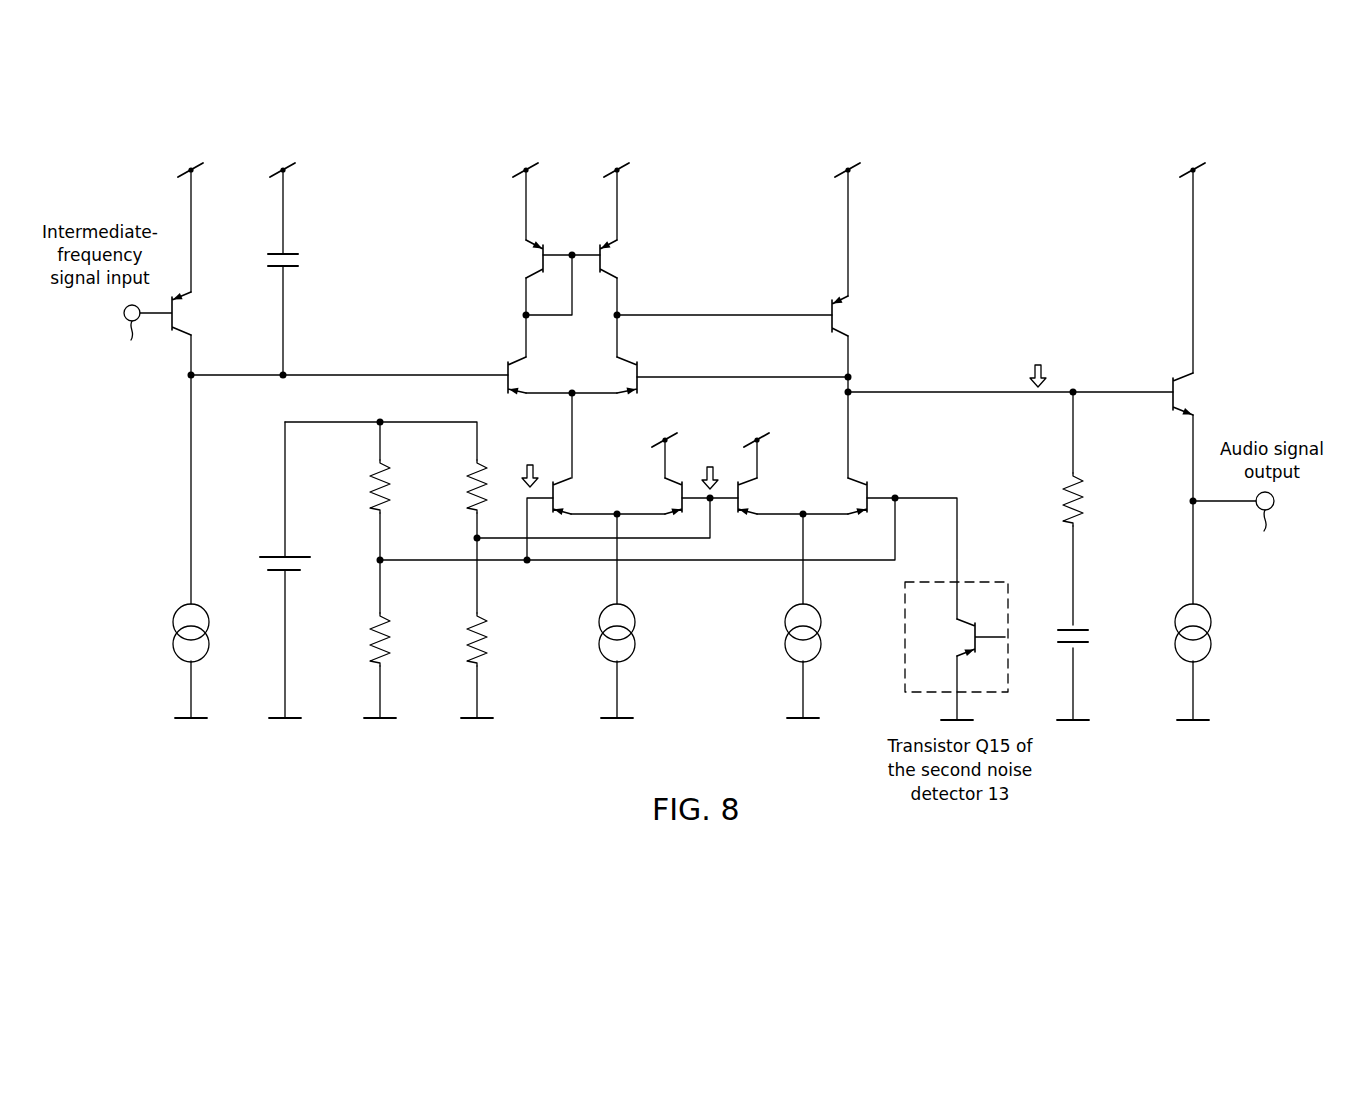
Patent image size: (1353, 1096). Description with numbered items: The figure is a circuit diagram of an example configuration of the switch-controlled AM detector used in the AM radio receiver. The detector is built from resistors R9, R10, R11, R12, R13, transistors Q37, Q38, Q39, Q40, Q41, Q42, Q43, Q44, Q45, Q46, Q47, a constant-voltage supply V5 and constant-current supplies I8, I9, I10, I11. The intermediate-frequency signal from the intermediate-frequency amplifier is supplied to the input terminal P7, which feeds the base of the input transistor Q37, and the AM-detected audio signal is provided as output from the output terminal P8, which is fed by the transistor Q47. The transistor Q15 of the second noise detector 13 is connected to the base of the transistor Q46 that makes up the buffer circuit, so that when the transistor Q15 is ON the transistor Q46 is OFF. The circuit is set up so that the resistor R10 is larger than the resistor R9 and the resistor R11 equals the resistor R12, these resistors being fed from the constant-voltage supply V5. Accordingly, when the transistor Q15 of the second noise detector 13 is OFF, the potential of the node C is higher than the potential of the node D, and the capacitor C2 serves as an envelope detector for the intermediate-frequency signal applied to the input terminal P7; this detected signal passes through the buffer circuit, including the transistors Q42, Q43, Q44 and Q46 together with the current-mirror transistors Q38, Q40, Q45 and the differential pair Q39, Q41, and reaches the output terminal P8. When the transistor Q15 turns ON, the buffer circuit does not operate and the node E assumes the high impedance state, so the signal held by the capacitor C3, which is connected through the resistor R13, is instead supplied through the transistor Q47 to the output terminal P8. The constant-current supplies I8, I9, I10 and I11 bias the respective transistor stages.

The transistor Q37 is at (184, 313).
The input terminal P7 is at (133, 333).
The capacitor C2 is at (295, 249).
The constant-current supply I8 is at (201, 633).
The transistor Q38 is at (517, 259).
The transistor Q40 is at (628, 259).
The transistor Q45 is at (860, 316).
The transistor Q39 is at (538, 376).
The transistor Q41 is at (610, 375).
The transistor Q42 is at (583, 496).
The transistor Q43 is at (656, 496).
The transistor Q44 is at (767, 496).
The transistor Q46 is at (841, 496).
The transistor Q47 is at (1203, 394).
The transistor of the second noise detector Q15 is at (963, 637).
The second noise detector 13 is at (956, 637).
The resistor R9 is at (363, 486).
The resistor R10 is at (362, 639).
The resistor R11 is at (459, 486).
The resistor R12 is at (458, 639).
The resistor R13 is at (1053, 499).
The constant-voltage supply V5 is at (290, 548).
The constant-current supply I9 is at (628, 633).
The constant-current supply I10 is at (819, 633).
The capacitor C3 is at (1084, 622).
The constant-current supply I11 is at (1209, 633).
The output terminal P8 is at (1235, 524).
The node C is at (530, 464).
The node D is at (710, 466).
The node E is at (1038, 364).